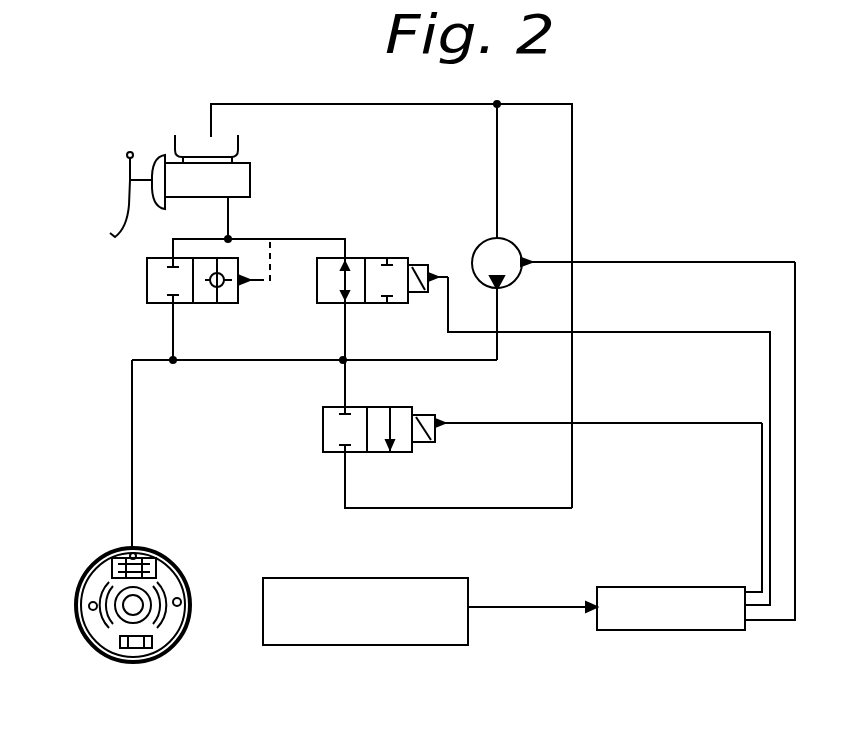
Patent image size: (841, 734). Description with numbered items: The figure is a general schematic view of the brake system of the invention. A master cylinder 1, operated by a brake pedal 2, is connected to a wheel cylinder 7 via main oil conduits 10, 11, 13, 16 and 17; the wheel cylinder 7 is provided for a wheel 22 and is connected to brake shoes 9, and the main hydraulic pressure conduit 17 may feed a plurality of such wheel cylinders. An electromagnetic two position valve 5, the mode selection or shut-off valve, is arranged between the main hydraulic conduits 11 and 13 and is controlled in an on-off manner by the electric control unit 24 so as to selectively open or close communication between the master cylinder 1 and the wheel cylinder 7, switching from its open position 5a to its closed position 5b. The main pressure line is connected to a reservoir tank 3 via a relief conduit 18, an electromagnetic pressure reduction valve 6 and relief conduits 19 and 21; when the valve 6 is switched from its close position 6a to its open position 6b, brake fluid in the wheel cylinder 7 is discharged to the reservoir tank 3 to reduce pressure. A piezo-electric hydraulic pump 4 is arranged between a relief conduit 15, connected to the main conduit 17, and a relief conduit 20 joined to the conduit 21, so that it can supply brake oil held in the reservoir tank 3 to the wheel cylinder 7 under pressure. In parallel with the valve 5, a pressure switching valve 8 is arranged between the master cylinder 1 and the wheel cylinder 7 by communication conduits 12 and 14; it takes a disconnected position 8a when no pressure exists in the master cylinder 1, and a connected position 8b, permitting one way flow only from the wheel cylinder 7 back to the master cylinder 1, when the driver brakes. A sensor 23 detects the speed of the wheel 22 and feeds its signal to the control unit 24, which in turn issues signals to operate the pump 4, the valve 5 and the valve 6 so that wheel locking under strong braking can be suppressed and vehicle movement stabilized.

The master cylinder 1 is at (243, 177).
The brake pedal 2 is at (108, 236).
The reservoir tank 3 is at (185, 140).
The piezo-electric hydraulic pump 4 is at (508, 248).
The electromagnetic two position valve 5 is at (353, 267).
The open position 5a is at (362, 265).
The closed position 5b is at (401, 265).
The electromagnetic pressure reduction valve 6 is at (373, 433).
The close position 6a is at (327, 412).
The open position 6b is at (375, 468).
The wheel cylinder 7 is at (131, 625).
The pressure switching valve 8 is at (190, 267).
The disconnected position 8a is at (154, 267).
The connected position 8b is at (258, 261).
The brake shoes 9 is at (90, 578).
The main oil conduit 10 is at (230, 213).
The main oil conduit 11 is at (323, 238).
The communication conduit 12 is at (173, 238).
The main oil conduit 13 is at (347, 330).
The communication conduit 14 is at (172, 330).
The relief conduit 15 is at (482, 362).
The main oil conduit 16 is at (237, 361).
The main hydraulic pressure conduit 17 is at (133, 455).
The relief conduit 18 is at (346, 378).
The relief conduit 19 is at (538, 509).
The relief conduit 20 is at (500, 153).
The relief conduit 21 is at (334, 104).
The wheel 22 is at (153, 660).
The sensor 23 is at (448, 578).
The electric control unit 24 is at (702, 587).